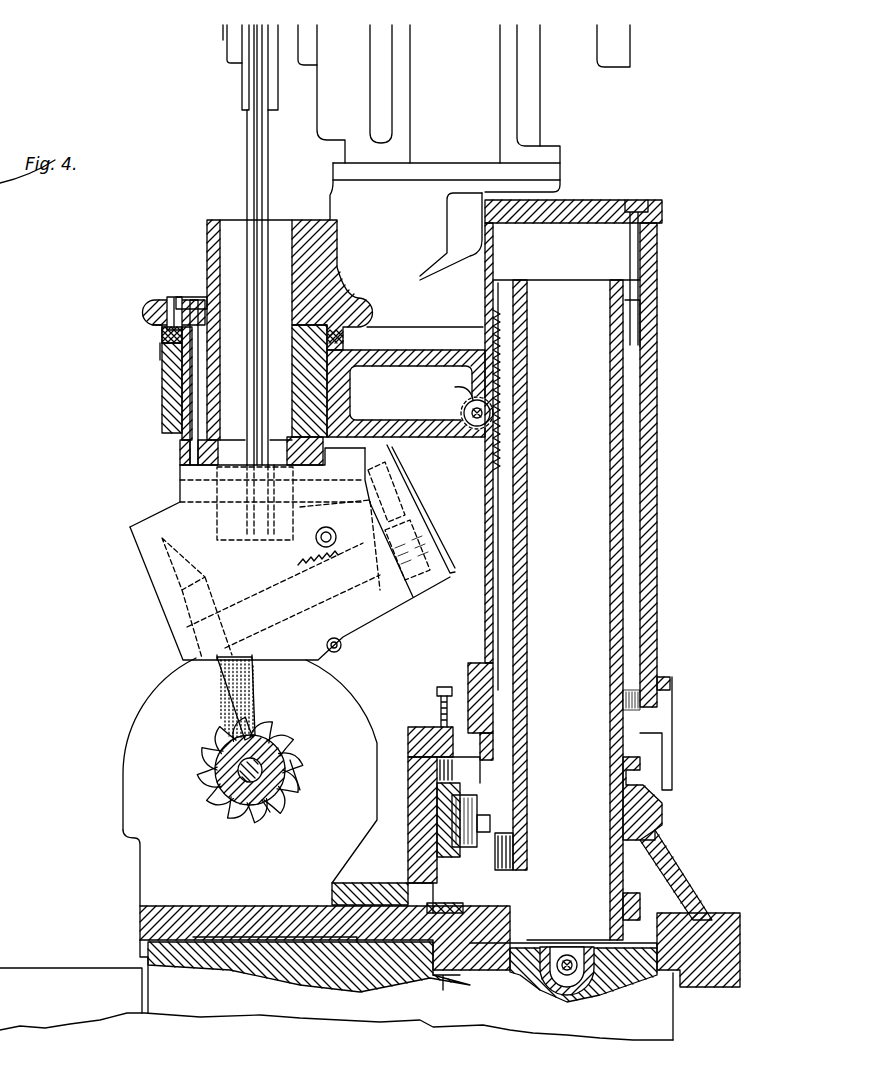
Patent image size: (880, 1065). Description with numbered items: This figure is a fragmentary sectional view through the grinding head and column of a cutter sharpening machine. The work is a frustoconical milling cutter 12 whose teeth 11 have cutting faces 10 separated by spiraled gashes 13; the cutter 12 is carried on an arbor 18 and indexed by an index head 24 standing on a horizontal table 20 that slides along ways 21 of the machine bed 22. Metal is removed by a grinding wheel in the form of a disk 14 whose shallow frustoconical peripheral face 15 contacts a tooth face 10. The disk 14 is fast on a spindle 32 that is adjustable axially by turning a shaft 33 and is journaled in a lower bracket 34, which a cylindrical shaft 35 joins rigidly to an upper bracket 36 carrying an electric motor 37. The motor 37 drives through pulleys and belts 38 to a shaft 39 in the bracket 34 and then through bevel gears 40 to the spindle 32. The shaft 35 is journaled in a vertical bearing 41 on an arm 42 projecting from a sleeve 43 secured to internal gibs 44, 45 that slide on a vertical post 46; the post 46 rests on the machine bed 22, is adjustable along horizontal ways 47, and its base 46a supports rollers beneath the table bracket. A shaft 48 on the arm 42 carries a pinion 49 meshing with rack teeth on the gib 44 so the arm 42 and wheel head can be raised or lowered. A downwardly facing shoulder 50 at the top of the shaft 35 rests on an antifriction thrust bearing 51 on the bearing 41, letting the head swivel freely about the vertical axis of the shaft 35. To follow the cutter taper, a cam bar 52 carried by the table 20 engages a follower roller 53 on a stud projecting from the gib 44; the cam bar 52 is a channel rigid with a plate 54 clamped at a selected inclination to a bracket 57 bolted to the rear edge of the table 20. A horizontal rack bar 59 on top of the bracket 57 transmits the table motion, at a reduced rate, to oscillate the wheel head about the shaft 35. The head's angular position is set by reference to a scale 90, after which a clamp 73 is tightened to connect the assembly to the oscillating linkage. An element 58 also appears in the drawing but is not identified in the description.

The cutting face 10 is at (268, 744).
The tooth 11 is at (223, 790).
The milling cutter 12 is at (189, 769).
The gash 13 is at (300, 790).
The disk 14 is at (249, 688).
The active peripheral face 15 is at (250, 704).
The arbor 18 is at (271, 812).
The horizontal table 20 is at (140, 920).
The ways 21 is at (385, 905).
The machine bed 22 is at (202, 1002).
The index head 24 is at (156, 702).
The spindle 32 is at (255, 596).
The shaft 33 is at (331, 534).
The bracket 34 is at (186, 477).
The cylindrical spacer or shaft 35 is at (195, 406).
The upper bracket 36 is at (207, 257).
The electric motor 37 is at (326, 134).
The pulleys and belts 38 is at (250, 172).
The shaft 39 is at (329, 525).
The bevel gears 40 is at (409, 510).
The vertical bearing 41 is at (185, 372).
The arm 42 is at (172, 391).
The sleeve 43 is at (492, 463).
The internal gib 44 is at (512, 667).
The internal gib 45 is at (618, 602).
The vertical post 46 is at (612, 782).
The base 46a is at (443, 990).
The horizontal ways 47 is at (507, 970).
The shaft 48 is at (469, 412).
The pinion 49 is at (475, 395).
The downwardly facing shoulder 50 is at (171, 298).
The antifriction thrust bearing 51 is at (162, 334).
The cam bar 52 is at (460, 847).
The follower roller 53 is at (490, 823).
The plate 54 is at (440, 807).
The bracket 57 is at (416, 783).
The key 58 is at (470, 886).
The horizontal rack bar 59 is at (422, 727).
The clamp 73 is at (145, 306).
The scale 90 is at (160, 353).